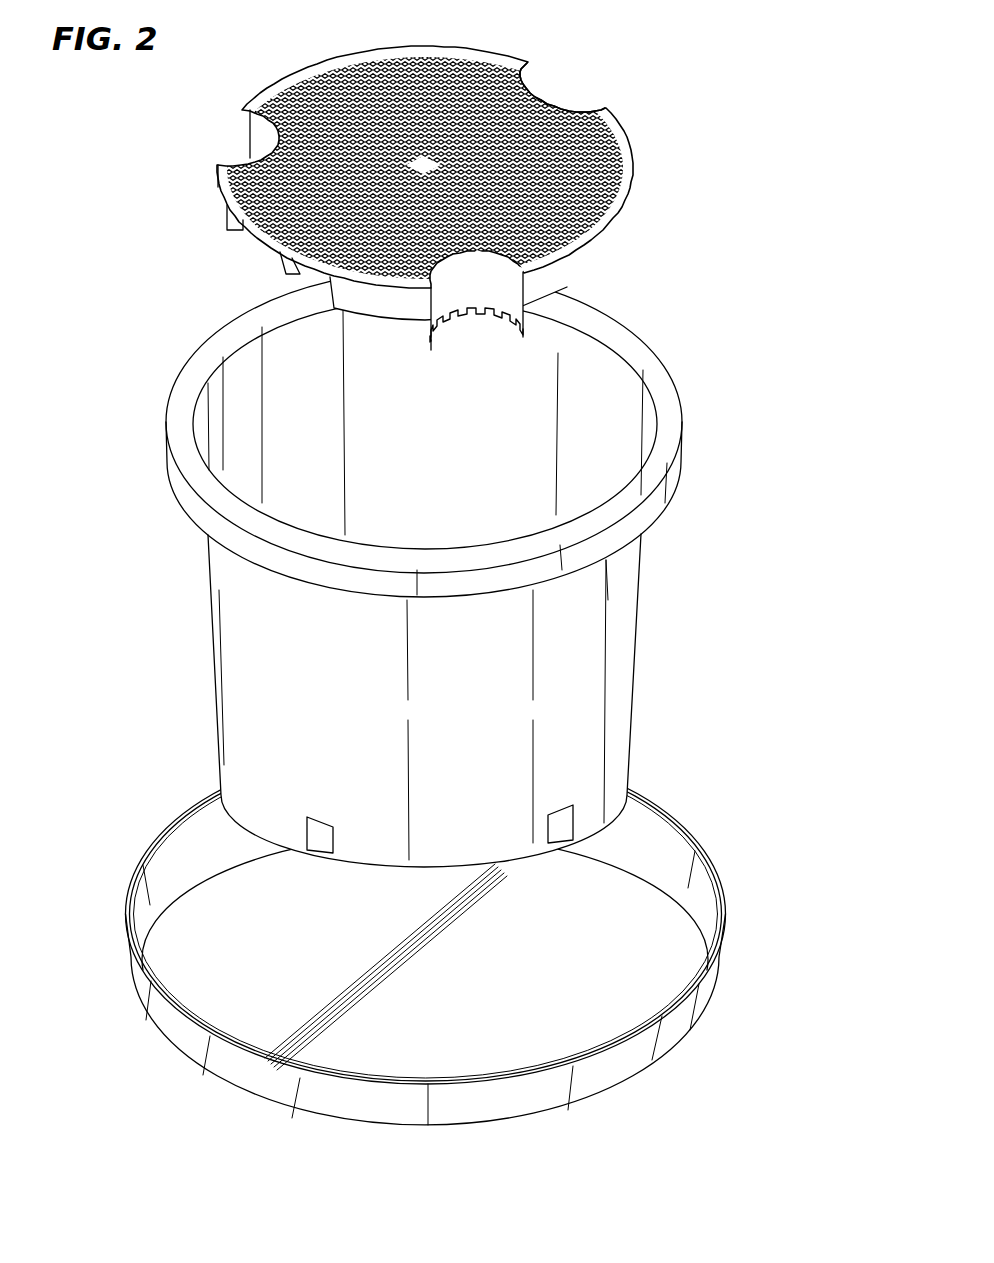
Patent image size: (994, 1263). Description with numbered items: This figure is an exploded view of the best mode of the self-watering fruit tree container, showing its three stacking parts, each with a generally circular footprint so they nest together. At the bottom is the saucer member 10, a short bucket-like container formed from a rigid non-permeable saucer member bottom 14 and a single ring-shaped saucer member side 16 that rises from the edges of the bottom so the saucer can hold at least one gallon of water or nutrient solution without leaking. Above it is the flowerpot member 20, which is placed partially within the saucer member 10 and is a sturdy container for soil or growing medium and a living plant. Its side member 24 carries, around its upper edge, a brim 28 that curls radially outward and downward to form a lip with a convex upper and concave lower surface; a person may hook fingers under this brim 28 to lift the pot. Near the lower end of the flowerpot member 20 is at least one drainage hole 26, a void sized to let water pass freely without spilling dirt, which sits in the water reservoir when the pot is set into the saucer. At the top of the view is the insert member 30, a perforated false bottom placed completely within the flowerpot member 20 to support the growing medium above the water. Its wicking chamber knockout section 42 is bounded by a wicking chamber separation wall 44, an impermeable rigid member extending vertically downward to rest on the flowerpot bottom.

The saucer member 10 is at (430, 935).
The saucer member bottom 14 is at (207, 983).
The saucer member side 16 is at (263, 1078).
The flowerpot member 20 is at (481, 569).
The side member 24 is at (621, 698).
The drainage hole 26 is at (563, 825).
The brim 28 is at (683, 425).
The insert member 30 is at (491, 195).
The wicking chamber knockout section 42 is at (540, 107).
The wicking chamber separation wall 44 is at (498, 297).